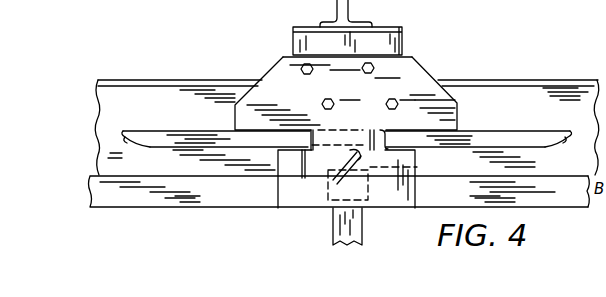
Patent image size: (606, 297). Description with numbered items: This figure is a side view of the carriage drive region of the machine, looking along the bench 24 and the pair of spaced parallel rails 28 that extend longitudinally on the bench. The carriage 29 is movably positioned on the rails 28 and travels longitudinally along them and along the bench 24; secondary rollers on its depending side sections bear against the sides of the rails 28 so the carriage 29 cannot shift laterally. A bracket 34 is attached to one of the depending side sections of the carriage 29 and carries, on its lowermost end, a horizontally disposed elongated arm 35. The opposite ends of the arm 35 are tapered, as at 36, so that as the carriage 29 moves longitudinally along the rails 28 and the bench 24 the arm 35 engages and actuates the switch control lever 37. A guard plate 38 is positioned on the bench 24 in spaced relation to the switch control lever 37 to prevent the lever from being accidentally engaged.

The bench 24 is at (177, 197).
The rails 28 is at (347, 127).
The carriage 29 is at (403, 53).
The bracket 34 is at (458, 110).
The elongated arm 35 is at (548, 118).
The tapered ends 36 is at (135, 147).
The switch control lever 37 is at (417, 167).
The guard plate 38 is at (346, 179).